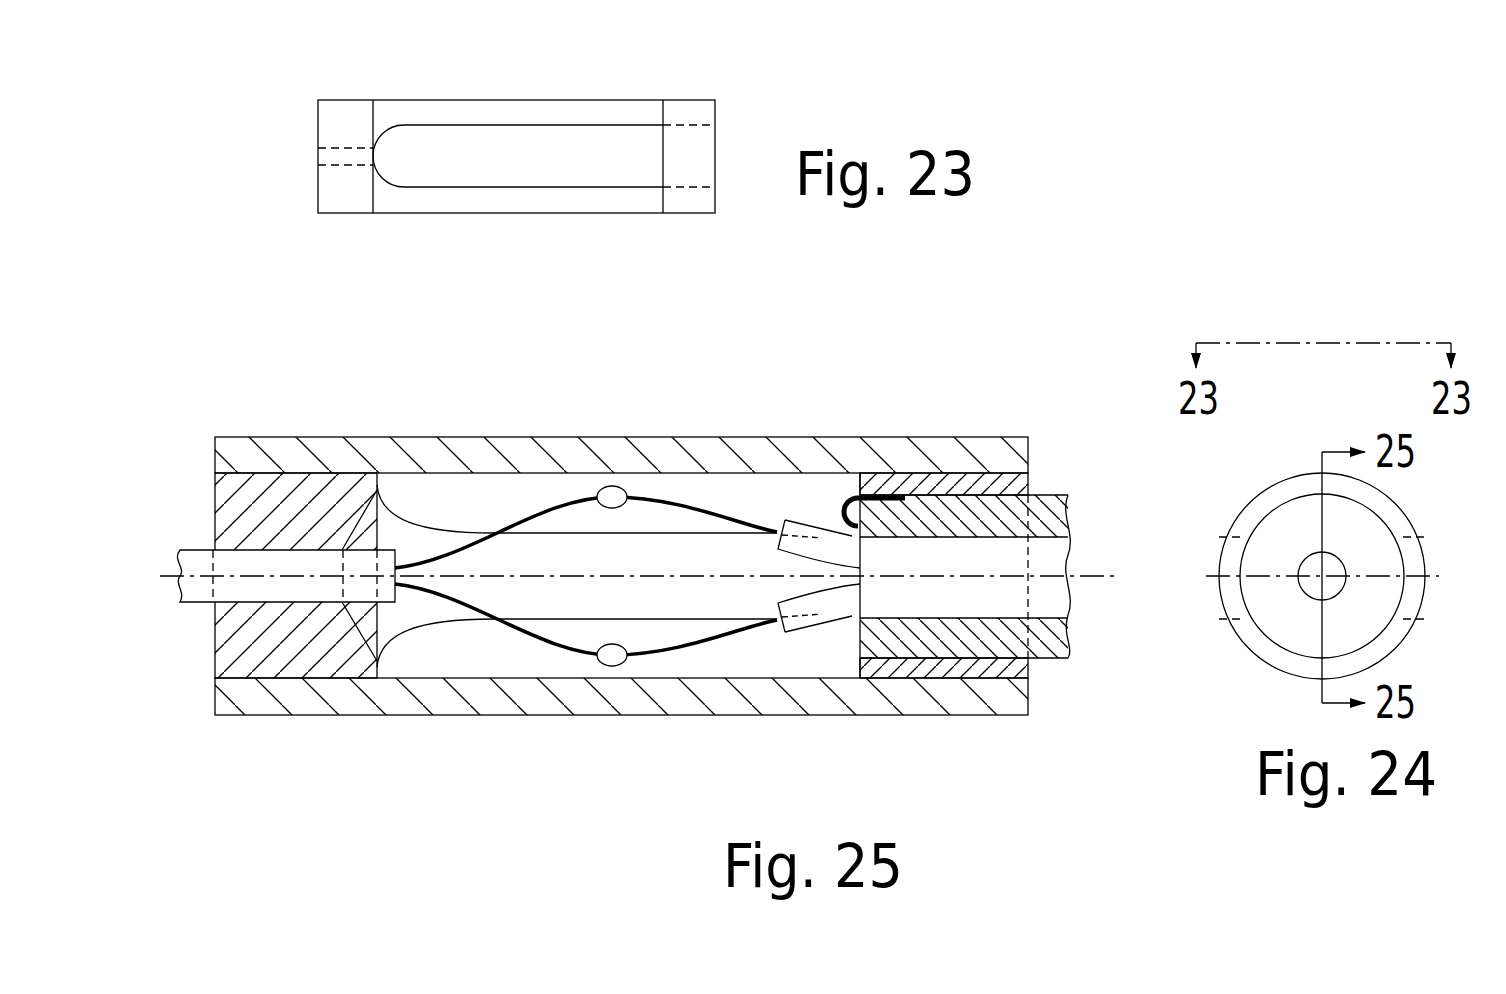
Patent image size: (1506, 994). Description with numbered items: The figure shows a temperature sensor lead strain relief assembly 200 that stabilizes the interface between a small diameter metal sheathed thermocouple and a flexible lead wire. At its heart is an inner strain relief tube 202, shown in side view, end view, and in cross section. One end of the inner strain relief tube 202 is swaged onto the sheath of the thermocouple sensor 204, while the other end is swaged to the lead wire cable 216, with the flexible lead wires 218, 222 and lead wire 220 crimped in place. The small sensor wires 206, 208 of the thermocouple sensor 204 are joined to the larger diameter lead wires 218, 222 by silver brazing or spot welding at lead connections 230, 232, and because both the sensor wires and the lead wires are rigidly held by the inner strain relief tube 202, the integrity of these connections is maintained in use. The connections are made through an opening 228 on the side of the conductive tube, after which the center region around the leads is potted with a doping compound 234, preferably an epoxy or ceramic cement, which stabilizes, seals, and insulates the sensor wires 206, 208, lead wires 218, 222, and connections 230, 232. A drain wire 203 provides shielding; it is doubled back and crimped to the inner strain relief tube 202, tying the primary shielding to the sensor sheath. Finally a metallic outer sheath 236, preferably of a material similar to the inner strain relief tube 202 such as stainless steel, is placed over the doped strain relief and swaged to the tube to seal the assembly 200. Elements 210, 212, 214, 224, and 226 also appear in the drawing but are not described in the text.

In FIG. 25, the strain relief assembly 200 is at (660, 591).
In FIG. 23, the inner strain relief tube 202 is at (692, 100).
In FIG. 24, the inner strain relief tube 202 is at (1263, 495).
In FIG. 25, the inner strain relief tube 202 is at (905, 680).
In FIG. 25, the drain wire 203 is at (848, 489).
In FIG. 25, the thermocouple sensor 204 is at (193, 603).
In FIG. 25, the sensor wire 206 is at (523, 633).
In FIG. 25, the sensor wire 208 is at (537, 503).
In FIG. 23, the lumen 210 is at (385, 154).
In FIG. 24, the lumen 210 is at (1341, 597).
In FIG. 25, the lumen 210 is at (283, 585).
In FIG. 25, the proximal plug 212 is at (377, 725).
In FIG. 23, the bore 214 is at (702, 158).
In FIG. 24, the bore 214 is at (1273, 650).
In FIG. 25, the bore 214 is at (1016, 529).
In FIG. 25, the lead wire cable 216 is at (868, 727).
In FIG. 25, the lead wire 218 is at (700, 640).
In FIG. 25, the lead wire 220 is at (800, 625).
In FIG. 25, the lead wire 222 is at (698, 505).
In FIG. 25, the upper collar 224 is at (803, 525).
In FIG. 25, the distal plug assembly 226 is at (1010, 626).
In FIG. 23, the opening 228 is at (471, 162).
In FIG. 24, the opening 228 is at (1228, 595).
In FIG. 25, the opening 228 is at (478, 640).
In FIG. 25, the lead connection 230 is at (614, 667).
In FIG. 25, the lead connection 232 is at (612, 486).
In FIG. 25, the doping compound 234 is at (496, 641).
In FIG. 25, the outer sheath 236 is at (565, 715).